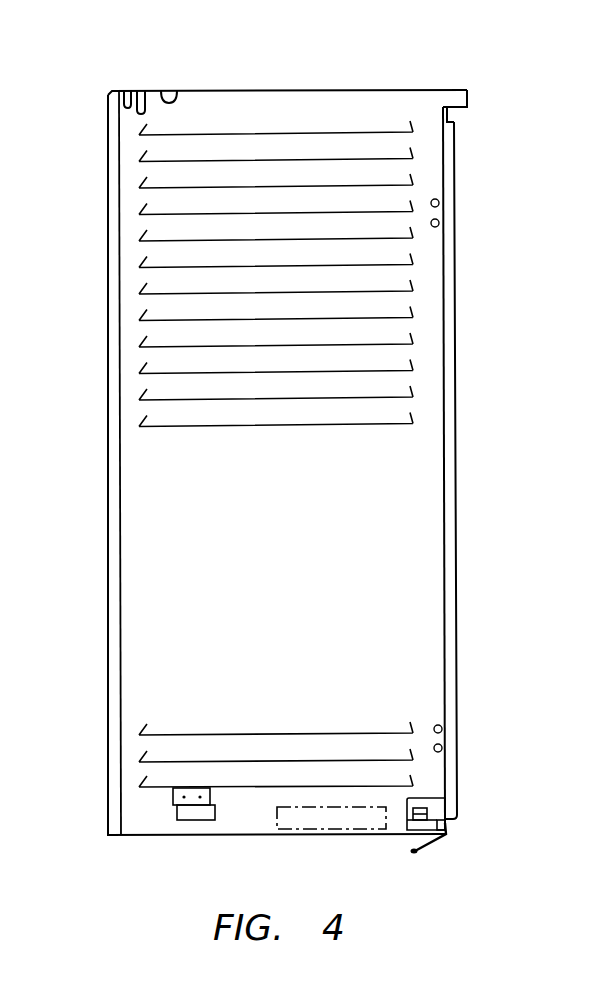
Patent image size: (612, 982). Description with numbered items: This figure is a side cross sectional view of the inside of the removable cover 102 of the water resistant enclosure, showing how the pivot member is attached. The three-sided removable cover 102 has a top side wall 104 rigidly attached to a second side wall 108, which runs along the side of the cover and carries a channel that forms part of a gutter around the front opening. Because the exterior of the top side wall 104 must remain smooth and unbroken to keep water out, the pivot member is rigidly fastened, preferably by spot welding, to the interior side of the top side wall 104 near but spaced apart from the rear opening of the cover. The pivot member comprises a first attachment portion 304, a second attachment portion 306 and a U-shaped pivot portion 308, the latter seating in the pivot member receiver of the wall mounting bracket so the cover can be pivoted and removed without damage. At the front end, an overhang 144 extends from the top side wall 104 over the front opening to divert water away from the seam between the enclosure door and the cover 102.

The removable cover 102 is at (380, 33).
The top side wall 104 is at (383, 89).
The overhang 144 is at (468, 97).
The second side wall 108 is at (415, 549).
The first attachment portion 304 is at (176, 90).
The second attachment portion 306 is at (118, 113).
The U-shaped pivot portion 308 is at (134, 115).